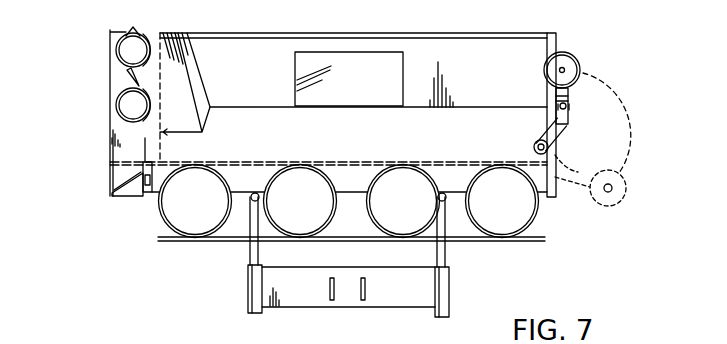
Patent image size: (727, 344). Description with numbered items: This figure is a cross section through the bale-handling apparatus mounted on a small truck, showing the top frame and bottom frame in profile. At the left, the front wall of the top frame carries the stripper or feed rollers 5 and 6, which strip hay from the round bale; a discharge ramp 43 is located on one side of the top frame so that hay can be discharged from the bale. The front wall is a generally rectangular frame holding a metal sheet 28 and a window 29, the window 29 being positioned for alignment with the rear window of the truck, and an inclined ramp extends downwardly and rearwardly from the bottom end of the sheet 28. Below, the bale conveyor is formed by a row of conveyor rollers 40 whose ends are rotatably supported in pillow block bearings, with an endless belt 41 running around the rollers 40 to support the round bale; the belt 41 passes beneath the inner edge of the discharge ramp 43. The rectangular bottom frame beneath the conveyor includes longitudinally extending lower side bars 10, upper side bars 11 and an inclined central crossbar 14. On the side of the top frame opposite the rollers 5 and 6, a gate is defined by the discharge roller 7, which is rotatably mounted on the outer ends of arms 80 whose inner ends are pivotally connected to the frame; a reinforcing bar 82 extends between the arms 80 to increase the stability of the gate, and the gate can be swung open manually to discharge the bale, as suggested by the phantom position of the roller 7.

The feed roller 5 is at (118, 50).
The feed roller 6 is at (118, 105).
The discharge roller 7 is at (572, 52).
The lower side bar 10 is at (249, 297).
The upper side bar 11 is at (246, 165).
The inclined central crossbar 14 is at (348, 239).
The metal sheet 28 is at (483, 56).
The window 29 is at (375, 88).
The conveyor roller 40 is at (189, 223).
The endless belt 41 is at (161, 213).
The discharge ramp 43 is at (129, 184).
The arm 80 is at (555, 123).
The reinforcing bar 82 is at (572, 106).